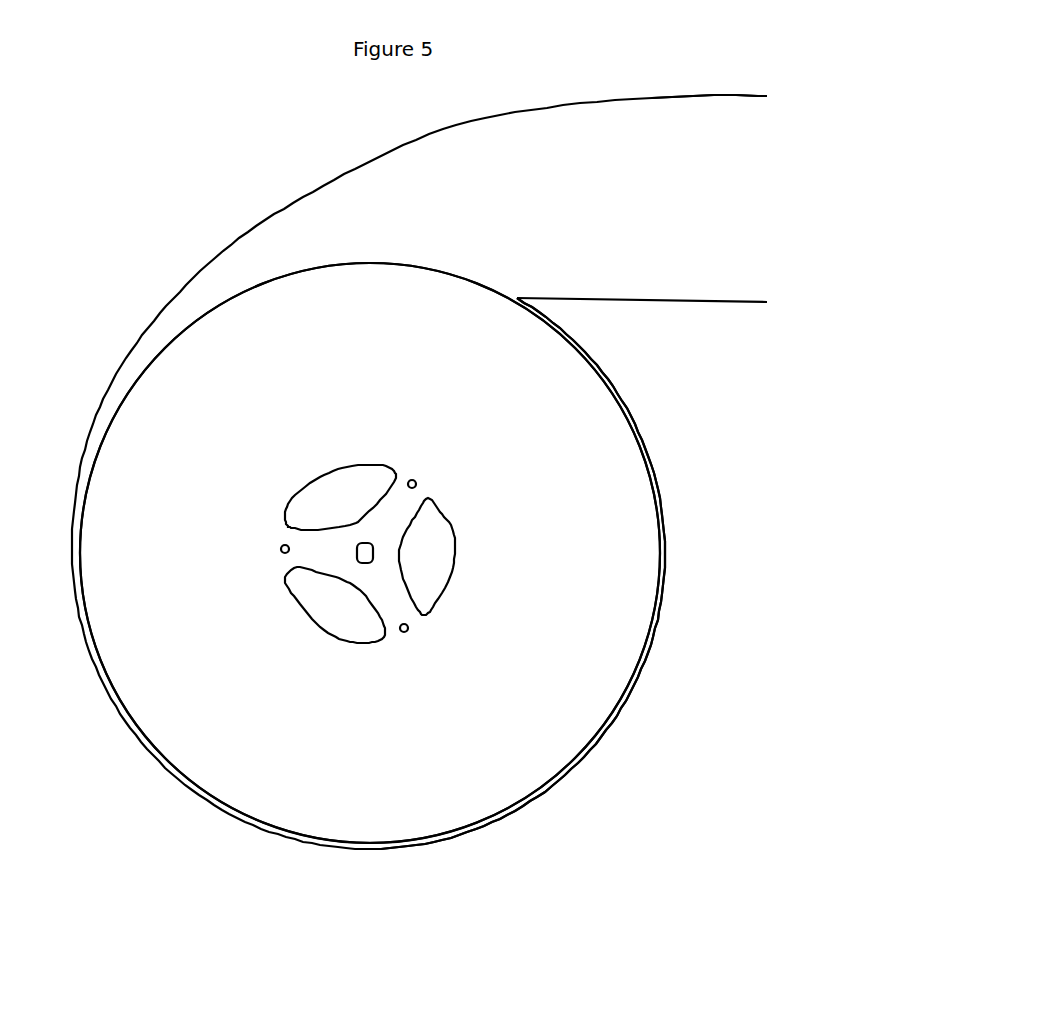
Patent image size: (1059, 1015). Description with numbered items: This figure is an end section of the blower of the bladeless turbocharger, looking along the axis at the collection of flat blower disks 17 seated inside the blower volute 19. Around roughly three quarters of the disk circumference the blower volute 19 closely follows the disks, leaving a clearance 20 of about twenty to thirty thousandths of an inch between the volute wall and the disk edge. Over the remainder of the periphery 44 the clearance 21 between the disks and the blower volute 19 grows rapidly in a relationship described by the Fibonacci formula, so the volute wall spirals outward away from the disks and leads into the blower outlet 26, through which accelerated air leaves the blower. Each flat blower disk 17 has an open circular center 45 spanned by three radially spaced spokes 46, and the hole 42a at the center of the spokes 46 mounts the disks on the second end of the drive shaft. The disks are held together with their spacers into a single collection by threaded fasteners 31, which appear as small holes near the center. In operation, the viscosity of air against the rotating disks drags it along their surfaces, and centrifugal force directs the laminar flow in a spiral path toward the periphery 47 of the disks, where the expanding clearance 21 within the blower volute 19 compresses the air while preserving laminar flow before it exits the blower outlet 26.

The flat blower disk 17 is at (560, 667).
The blower volute 19 is at (665, 613).
The clearance 20 is at (442, 835).
The clearance 21 is at (366, 192).
The blower outlet 26 is at (739, 133).
The threaded fastener 31 is at (281, 548).
The hole 42a is at (357, 550).
The periphery 44 is at (250, 310).
The open circular center 45 is at (328, 610).
The spoke 46 is at (390, 600).
The periphery 47 is at (616, 480).